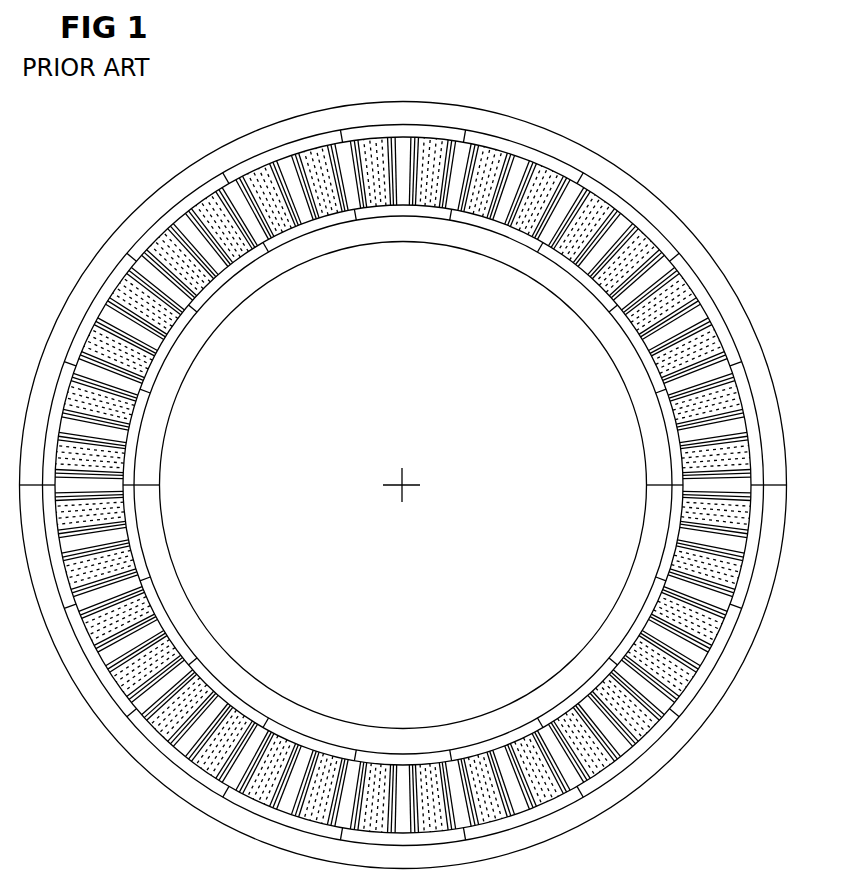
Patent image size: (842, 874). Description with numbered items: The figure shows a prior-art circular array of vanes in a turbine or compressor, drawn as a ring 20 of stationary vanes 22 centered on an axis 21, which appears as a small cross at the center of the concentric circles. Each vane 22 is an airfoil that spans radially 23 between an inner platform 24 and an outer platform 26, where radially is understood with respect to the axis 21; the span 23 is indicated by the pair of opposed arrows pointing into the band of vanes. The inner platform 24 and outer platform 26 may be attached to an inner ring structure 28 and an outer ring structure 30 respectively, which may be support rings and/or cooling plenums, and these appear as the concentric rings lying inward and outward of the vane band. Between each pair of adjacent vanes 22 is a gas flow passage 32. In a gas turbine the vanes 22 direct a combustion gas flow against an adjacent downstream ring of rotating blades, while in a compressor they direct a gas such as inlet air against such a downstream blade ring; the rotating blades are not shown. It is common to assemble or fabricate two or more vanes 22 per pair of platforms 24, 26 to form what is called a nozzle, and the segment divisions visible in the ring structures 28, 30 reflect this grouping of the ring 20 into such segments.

The ring 20 is at (91, 219).
The axis 21 is at (404, 488).
The stationary vanes 22 is at (692, 283).
The radial span 23 is at (427, 265).
The inner platform 24 is at (643, 343).
The outer platform 26 is at (718, 324).
The inner ring structure 28 is at (638, 388).
The outer ring structure 30 is at (744, 354).
The gas flow passage 32 is at (620, 225).